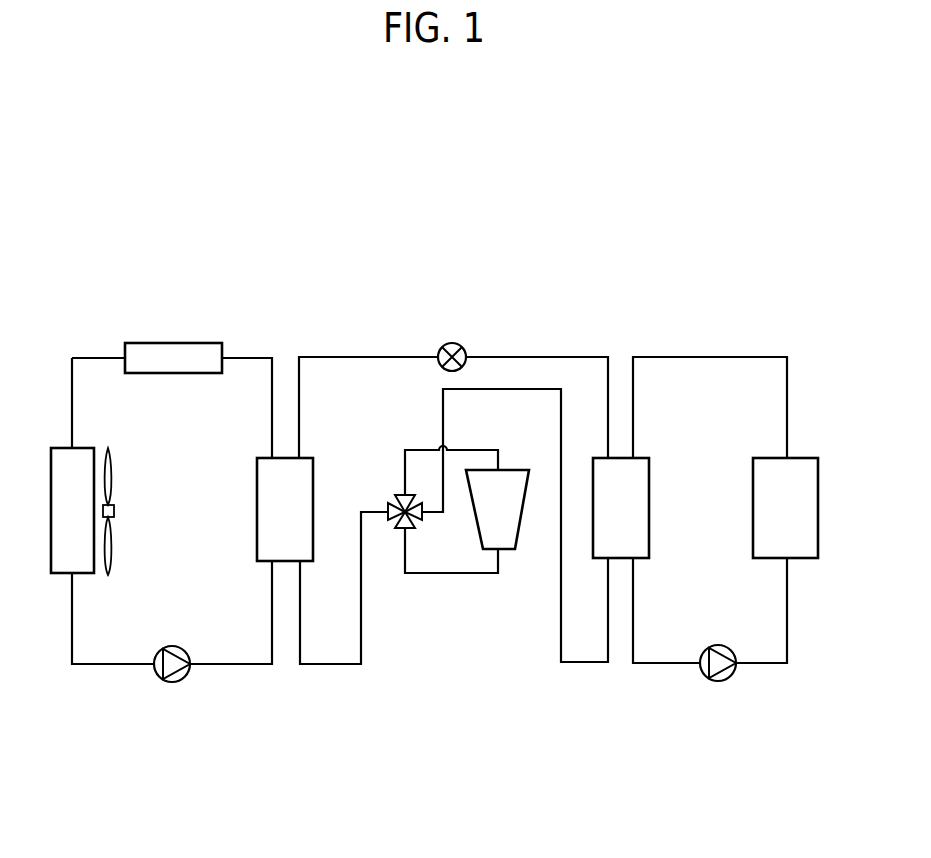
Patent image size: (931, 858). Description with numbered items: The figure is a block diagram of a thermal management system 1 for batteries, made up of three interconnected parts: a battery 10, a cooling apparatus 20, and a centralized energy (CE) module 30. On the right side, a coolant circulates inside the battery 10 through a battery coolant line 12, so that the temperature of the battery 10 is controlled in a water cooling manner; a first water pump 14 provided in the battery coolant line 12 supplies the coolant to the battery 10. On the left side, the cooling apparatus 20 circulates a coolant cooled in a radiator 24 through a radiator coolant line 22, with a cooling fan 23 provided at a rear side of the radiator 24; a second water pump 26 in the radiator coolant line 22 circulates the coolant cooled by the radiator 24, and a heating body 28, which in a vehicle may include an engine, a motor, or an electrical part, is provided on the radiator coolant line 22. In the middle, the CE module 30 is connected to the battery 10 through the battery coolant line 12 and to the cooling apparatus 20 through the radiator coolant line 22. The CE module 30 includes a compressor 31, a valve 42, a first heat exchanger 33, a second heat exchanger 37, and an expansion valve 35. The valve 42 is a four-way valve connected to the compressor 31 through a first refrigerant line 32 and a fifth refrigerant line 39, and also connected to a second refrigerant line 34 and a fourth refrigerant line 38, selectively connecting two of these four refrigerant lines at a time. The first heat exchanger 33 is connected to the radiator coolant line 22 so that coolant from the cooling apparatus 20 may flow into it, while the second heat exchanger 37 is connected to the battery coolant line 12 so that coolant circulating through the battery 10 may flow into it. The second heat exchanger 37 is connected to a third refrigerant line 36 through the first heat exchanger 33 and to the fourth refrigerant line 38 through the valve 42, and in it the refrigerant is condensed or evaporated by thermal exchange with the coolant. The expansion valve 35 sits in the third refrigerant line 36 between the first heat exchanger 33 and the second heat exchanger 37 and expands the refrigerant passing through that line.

The thermal management system 1 is at (444, 218).
The battery 10 is at (752, 490).
The battery coolant line 12 is at (748, 355).
The first water pump 14 is at (716, 683).
The cooling apparatus 20 is at (120, 308).
The radiator coolant line 22 is at (113, 666).
The cooling fan 23 is at (113, 477).
The radiator 24 is at (88, 447).
The second water pump 26 is at (172, 683).
The heating body 28 is at (190, 341).
The centralized energy (CE) module 30 is at (502, 317).
The compressor 31 is at (519, 469).
The first refrigerant line 32 is at (452, 575).
The first heat exchanger 33 is at (257, 511).
The second refrigerant line 34 is at (329, 666).
The expansion valve 35 is at (452, 343).
The third refrigerant line 36 is at (340, 355).
The second heat exchanger 37 is at (649, 528).
The fourth refrigerant line 38 is at (560, 618).
The fifth refrigerant line 39 is at (417, 448).
The valve 42 is at (387, 545).